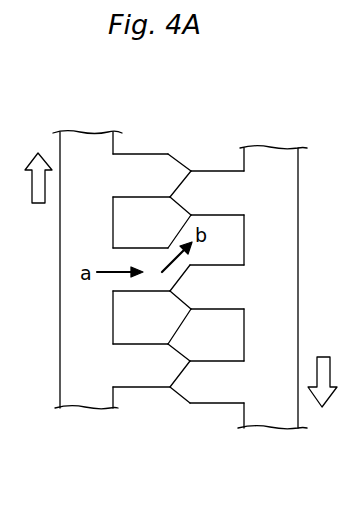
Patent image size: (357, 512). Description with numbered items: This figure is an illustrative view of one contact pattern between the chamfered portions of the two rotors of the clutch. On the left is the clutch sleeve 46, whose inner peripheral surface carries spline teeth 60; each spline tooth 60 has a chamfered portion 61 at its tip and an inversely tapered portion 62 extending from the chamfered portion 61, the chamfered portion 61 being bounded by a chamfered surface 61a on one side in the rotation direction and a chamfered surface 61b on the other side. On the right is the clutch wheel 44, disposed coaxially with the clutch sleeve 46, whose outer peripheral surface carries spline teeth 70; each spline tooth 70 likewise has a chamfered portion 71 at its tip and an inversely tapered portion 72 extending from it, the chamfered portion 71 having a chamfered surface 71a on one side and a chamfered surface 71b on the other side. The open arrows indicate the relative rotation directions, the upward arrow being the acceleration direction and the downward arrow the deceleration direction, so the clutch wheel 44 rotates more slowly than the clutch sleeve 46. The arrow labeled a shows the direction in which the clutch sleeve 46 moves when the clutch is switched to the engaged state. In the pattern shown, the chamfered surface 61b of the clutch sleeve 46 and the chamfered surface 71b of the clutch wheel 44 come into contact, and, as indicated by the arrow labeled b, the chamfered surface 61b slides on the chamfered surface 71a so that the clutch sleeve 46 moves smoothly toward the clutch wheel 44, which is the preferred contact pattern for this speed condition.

The spline teeth 60 is at (191, 88).
The inversely tapered portion 62 is at (135, 153).
The chamfered portion 61 is at (175, 153).
The chamfered surface 61a is at (175, 351).
The chamfered surface 61b is at (178, 203).
The spline teeth 70 is at (232, 470).
The inversely tapered portion 72 is at (220, 404).
The chamfered portion 71 is at (185, 404).
The chamfered surface 71a is at (187, 176).
The chamfered surface 71b is at (180, 300).
The clutch wheel 44 is at (270, 133).
The clutch sleeve 46 is at (73, 418).